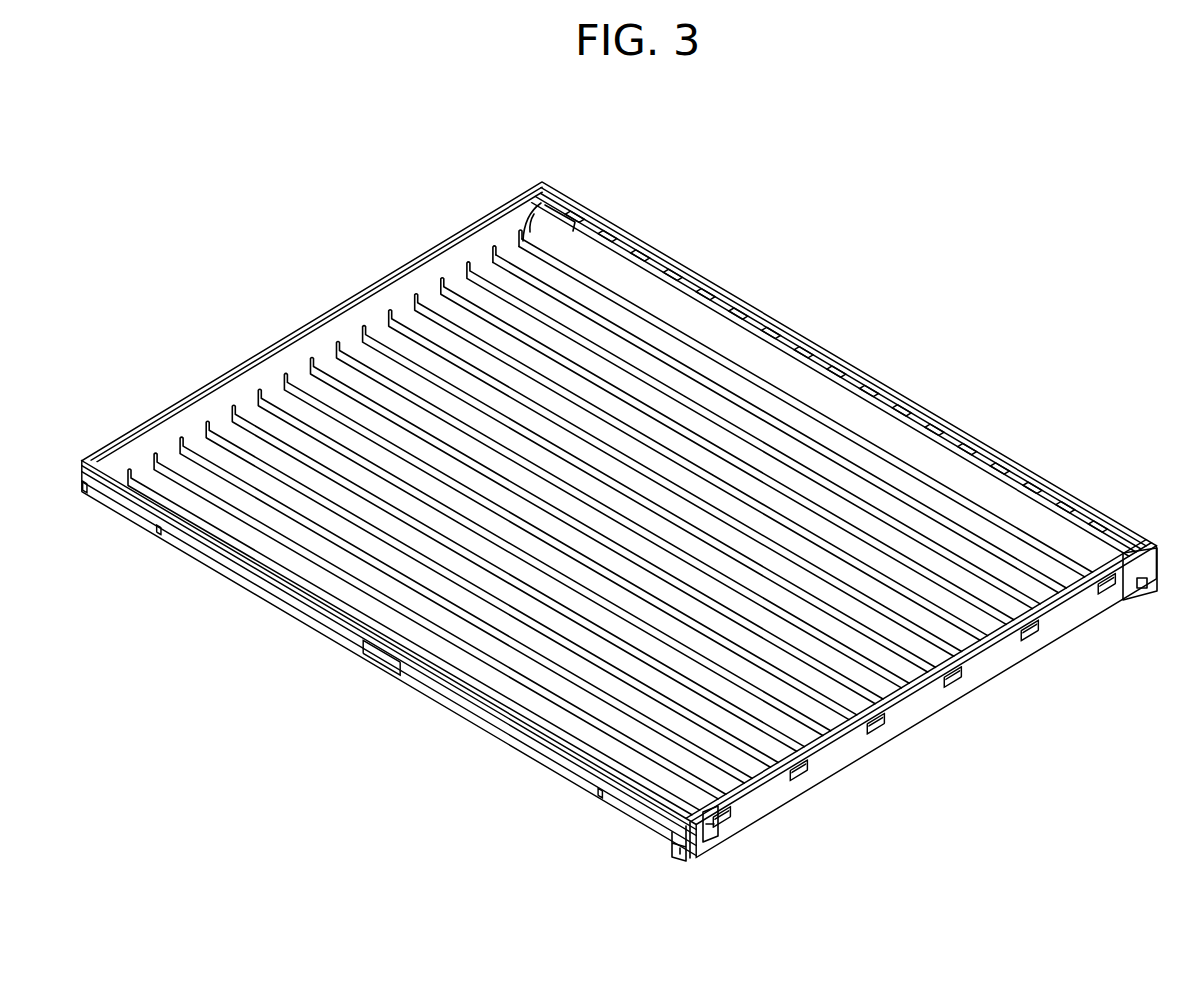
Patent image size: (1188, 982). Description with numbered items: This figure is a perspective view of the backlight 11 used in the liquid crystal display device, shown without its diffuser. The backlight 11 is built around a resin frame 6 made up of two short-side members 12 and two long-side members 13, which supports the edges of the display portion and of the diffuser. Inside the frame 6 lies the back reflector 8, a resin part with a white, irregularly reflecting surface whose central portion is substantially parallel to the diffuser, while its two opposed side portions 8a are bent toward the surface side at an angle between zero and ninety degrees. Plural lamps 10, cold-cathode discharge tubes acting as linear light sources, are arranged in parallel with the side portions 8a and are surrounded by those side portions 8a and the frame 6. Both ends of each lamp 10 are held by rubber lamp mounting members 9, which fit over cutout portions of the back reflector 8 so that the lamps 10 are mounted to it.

The frame 6 is at (619, 694).
The back reflector 8 is at (622, 316).
The side portions 8a is at (708, 330).
The lamp mounting members 9 is at (489, 257).
The lamps 10 is at (762, 382).
The backlight 11 is at (1002, 393).
The short-side members 12 is at (716, 849).
The long-side members 13 is at (650, 828).